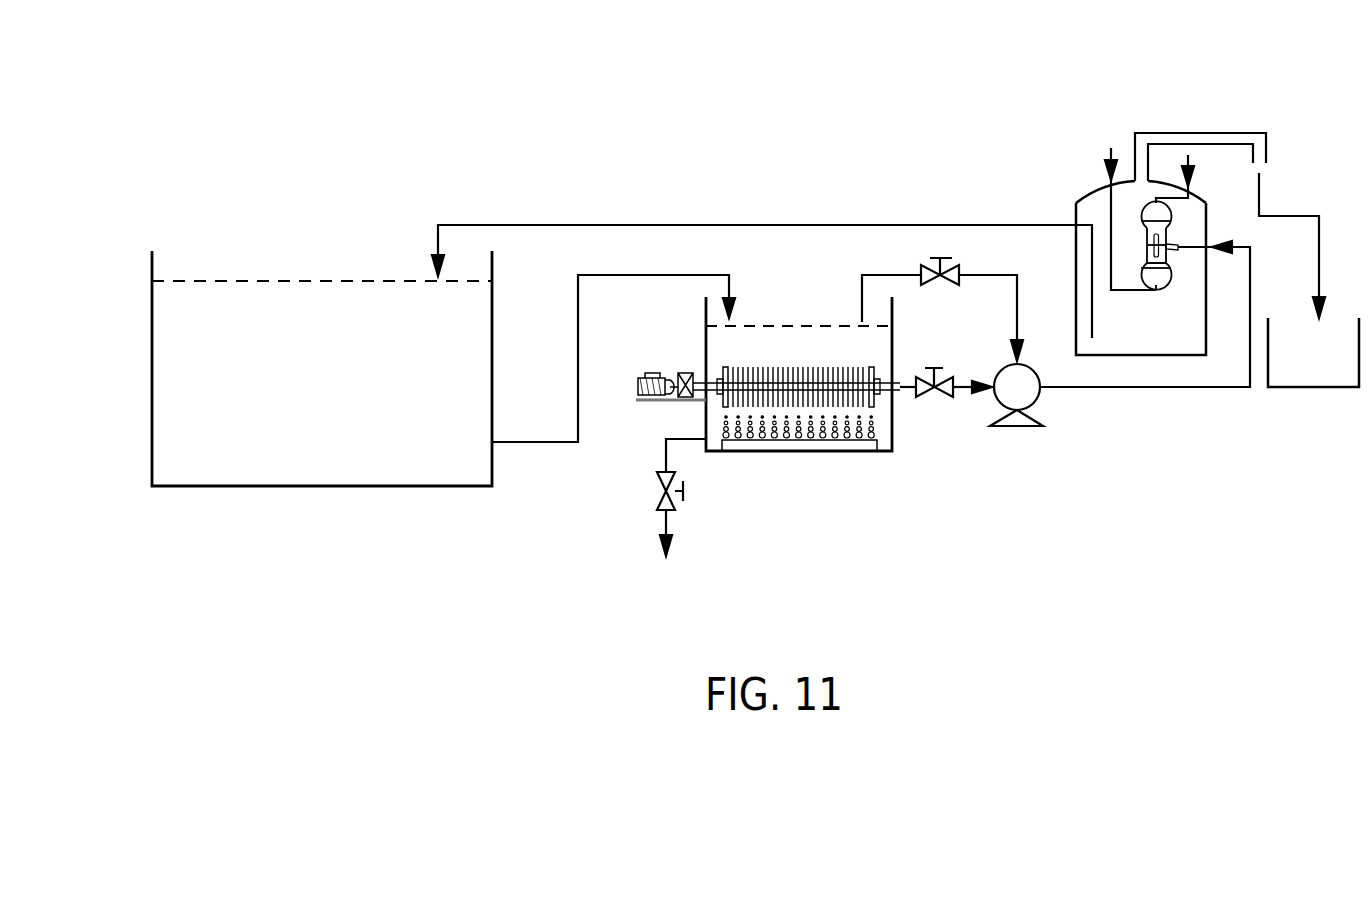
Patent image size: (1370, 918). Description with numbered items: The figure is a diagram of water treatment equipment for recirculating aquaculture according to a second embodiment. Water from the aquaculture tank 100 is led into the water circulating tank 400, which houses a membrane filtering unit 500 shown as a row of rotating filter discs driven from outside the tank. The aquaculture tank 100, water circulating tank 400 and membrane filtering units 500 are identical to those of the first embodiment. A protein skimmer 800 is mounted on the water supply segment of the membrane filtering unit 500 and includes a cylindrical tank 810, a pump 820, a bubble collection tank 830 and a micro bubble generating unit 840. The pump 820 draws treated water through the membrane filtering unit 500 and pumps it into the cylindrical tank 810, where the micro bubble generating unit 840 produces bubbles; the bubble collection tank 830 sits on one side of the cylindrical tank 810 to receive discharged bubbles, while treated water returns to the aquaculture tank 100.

The aquaculture tank 100 is at (320, 500).
The water circulating tank 400 is at (798, 465).
The membrane filtering unit 500 is at (771, 350).
The protein skimmer 800 is at (1118, 125).
The cylindrical tank 810 is at (1140, 357).
The pump 820 is at (1017, 427).
The bubble collection tank 830 is at (1313, 389).
The micro bubble generating unit 840 is at (1141, 222).